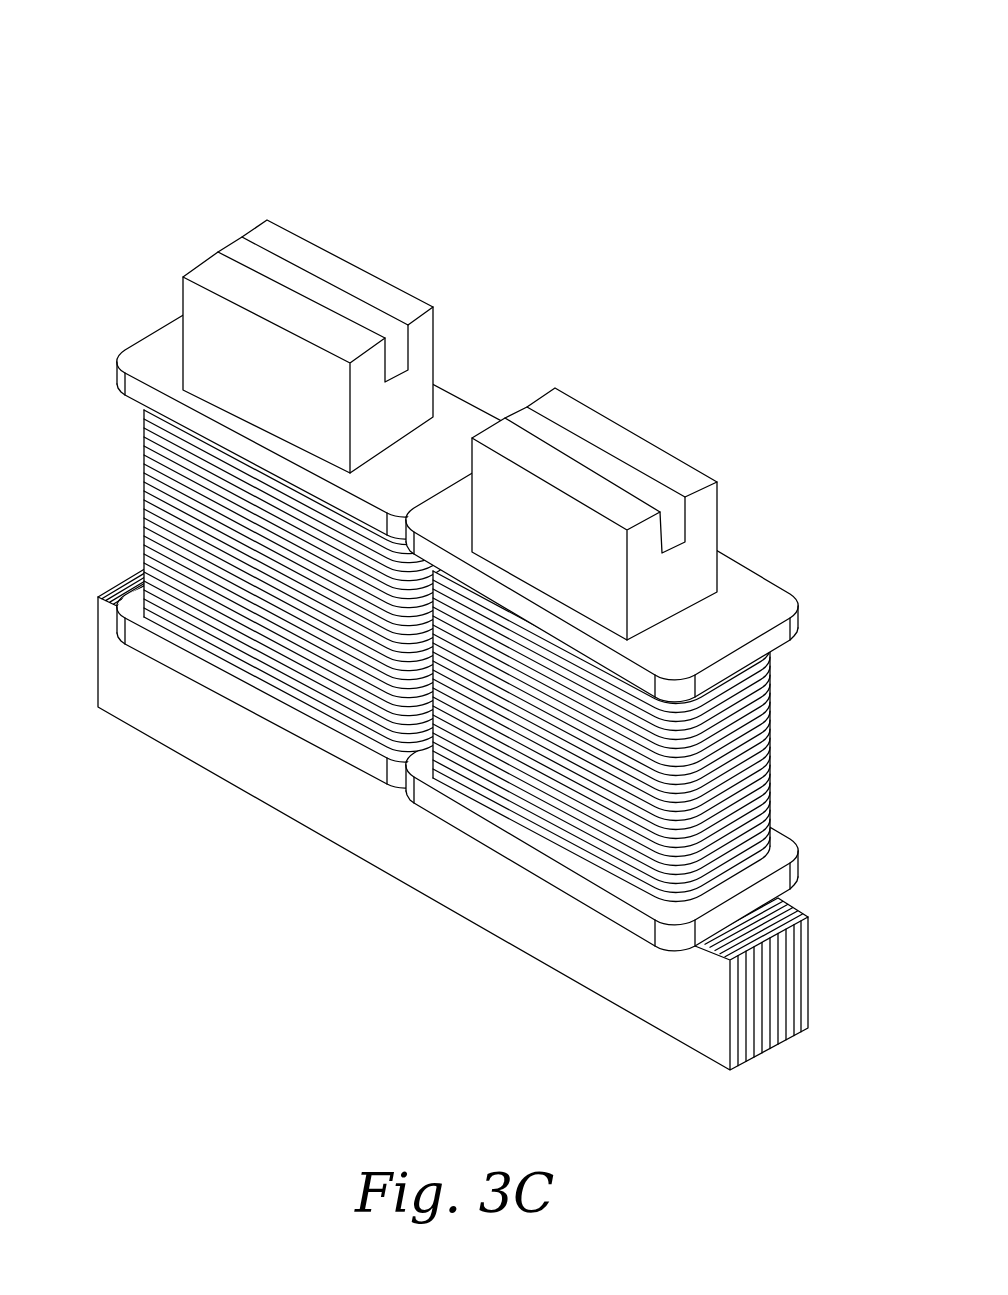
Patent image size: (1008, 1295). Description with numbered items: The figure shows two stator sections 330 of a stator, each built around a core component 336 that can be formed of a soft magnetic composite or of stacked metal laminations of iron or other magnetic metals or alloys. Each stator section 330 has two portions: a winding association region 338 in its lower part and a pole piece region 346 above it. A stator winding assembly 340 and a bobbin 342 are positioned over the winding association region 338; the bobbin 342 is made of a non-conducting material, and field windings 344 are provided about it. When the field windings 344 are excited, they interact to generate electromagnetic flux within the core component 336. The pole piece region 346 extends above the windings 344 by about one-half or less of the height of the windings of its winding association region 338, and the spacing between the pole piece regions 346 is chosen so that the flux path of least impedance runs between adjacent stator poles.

The stator section 330 is at (160, 86).
The core component 336 is at (235, 200).
The pole piece region 346 is at (147, 267).
The bobbin 342 is at (137, 357).
The stator winding assembly 340 is at (118, 426).
The winding association region 338 is at (120, 493).
The field windings 344 is at (158, 564).